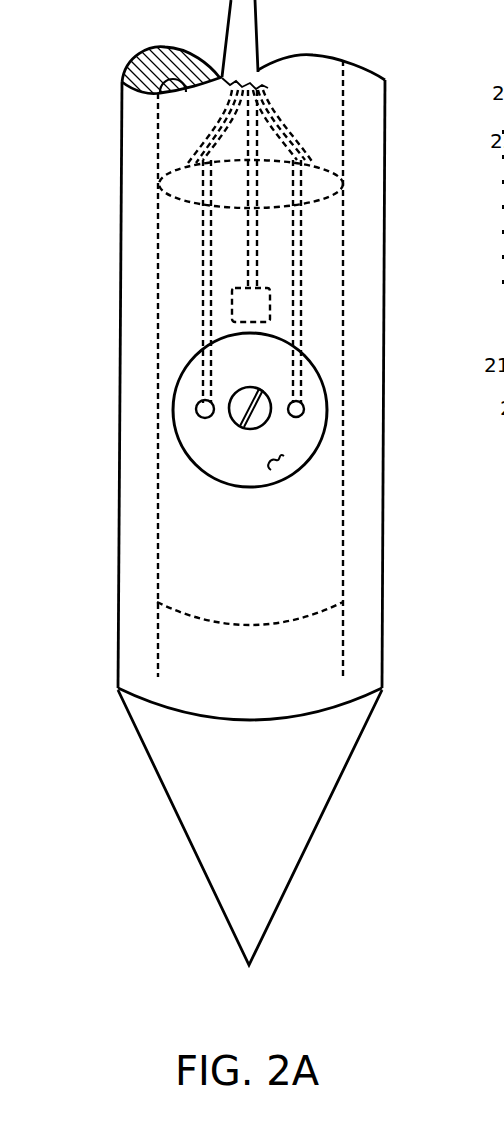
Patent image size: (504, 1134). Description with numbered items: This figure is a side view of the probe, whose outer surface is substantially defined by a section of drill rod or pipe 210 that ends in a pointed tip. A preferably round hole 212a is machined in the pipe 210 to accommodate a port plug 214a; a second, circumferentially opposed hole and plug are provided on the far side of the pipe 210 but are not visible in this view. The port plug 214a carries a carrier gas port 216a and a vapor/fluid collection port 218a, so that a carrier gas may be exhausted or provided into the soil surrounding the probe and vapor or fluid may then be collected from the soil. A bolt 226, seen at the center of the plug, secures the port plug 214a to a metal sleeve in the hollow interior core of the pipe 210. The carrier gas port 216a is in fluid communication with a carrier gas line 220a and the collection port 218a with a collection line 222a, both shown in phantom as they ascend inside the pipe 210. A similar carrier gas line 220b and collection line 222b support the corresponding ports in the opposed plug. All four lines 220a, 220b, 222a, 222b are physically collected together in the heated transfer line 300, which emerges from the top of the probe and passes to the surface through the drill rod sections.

The drill rod or pipe 210 is at (384, 251).
The heated transfer line 300 is at (257, 32).
The carrier gas line 220a is at (302, 216).
The carrier gas line 220b is at (190, 136).
The collection line 222a is at (200, 280).
The collection line 222b is at (295, 128).
The hole 212a is at (252, 486).
The port plug 214a is at (283, 458).
The carrier gas port 216a is at (304, 408).
The vapor/fluid collection port 218a is at (196, 409).
The bolt 226 is at (240, 425).